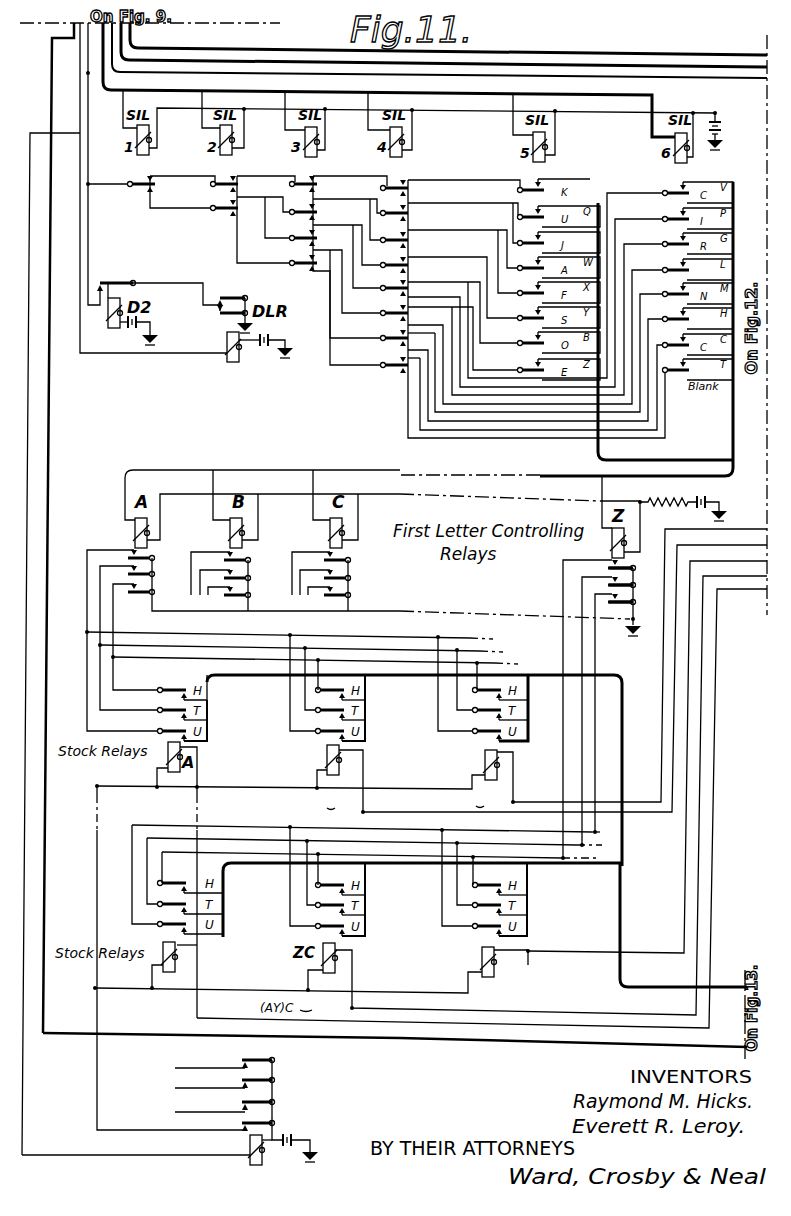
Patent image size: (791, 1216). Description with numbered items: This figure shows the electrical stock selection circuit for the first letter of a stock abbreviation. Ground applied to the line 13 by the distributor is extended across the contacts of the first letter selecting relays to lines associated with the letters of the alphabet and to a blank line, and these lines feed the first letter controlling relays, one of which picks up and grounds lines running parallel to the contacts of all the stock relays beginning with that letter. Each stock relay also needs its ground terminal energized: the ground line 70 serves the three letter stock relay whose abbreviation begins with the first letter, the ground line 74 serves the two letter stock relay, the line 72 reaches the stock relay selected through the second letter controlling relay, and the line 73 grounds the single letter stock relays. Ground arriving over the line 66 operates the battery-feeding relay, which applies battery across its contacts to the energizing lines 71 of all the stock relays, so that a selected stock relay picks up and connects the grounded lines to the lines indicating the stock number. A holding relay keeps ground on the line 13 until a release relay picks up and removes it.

The line 13 is at (88, 150).
The line 66 is at (115, 1162).
The ground line of stock relay AAR 70 is at (513, 776).
The energizing lines of the stock relays 71 is at (254, 777).
The line 72 is at (554, 952).
The line 73 is at (197, 977).
The ground line of stock relay AB 74 is at (365, 770).